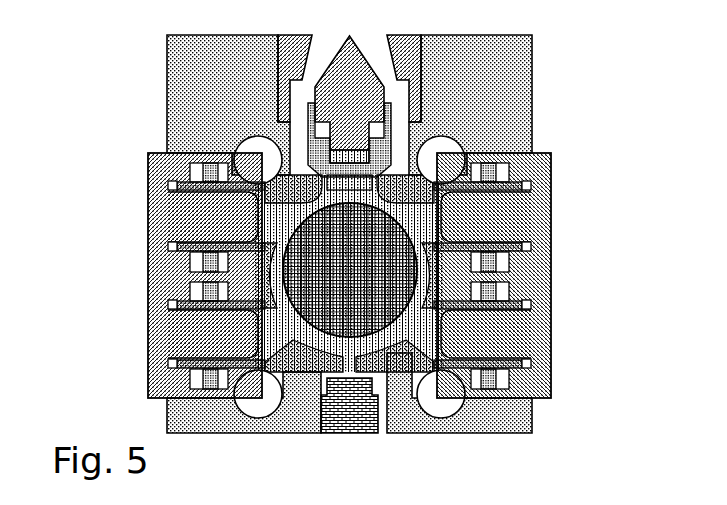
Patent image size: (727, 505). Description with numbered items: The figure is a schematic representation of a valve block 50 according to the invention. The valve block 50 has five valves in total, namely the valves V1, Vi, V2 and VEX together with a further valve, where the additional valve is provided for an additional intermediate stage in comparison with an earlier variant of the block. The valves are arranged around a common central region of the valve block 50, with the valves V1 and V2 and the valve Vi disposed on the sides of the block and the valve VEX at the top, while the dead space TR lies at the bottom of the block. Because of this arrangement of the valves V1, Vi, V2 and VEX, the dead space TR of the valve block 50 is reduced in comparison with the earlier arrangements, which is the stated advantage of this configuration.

The valve block 50 is at (563, 42).
The valve V_Ex VEX is at (346, 62).
The valve V1 is at (166, 336).
The valve V2 is at (533, 212).
The valve Vi is at (533, 336).
The dead space TR is at (421, 350).